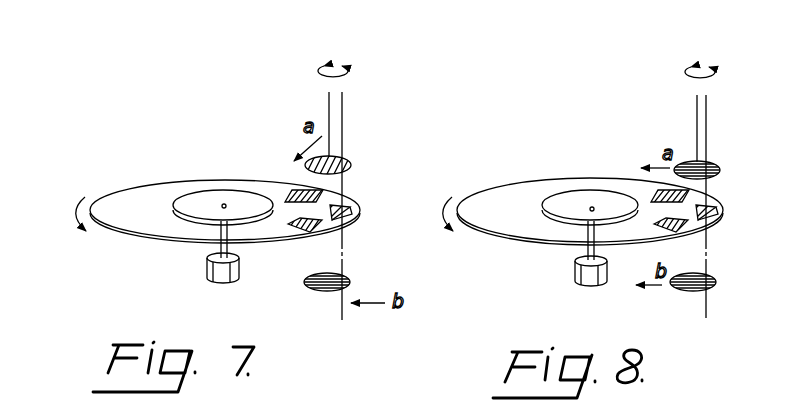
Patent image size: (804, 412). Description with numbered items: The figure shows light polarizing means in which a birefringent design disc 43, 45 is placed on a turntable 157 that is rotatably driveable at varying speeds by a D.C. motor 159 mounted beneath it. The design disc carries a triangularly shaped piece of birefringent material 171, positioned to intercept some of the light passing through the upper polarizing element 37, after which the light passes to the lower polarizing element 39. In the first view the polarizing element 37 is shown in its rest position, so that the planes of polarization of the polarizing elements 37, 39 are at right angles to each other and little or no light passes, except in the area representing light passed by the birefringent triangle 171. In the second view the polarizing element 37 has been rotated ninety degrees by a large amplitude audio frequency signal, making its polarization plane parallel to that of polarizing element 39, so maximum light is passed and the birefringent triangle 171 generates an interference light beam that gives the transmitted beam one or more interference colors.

In FIG. 7, the rotary table / disk 43 is at (196, 191).
In FIG. 8, the rotary table / disk 43 is at (587, 192).
In FIG. 7, the rotary table / disk 45 is at (118, 192).
In FIG. 8, the rotary table / disk 45 is at (517, 188).
In FIG. 7, the turntable 157 is at (204, 200).
In FIG. 8, the turntable 157 is at (582, 198).
In FIG. 7, the D.C. motor 159 is at (208, 266).
In FIG. 8, the D.C. motor 159 is at (576, 266).
In FIG. 7, the triangularly shaped piece of birefringent material 171 is at (352, 209).
In FIG. 8, the triangularly shaped piece of birefringent material 171 is at (720, 210).
In FIG. 7, the polarizing element 37 is at (350, 162).
In FIG. 8, the polarizing element 37 is at (720, 166).
In FIG. 7, the polarizing element 39 is at (350, 278).
In FIG. 8, the polarizing element 39 is at (716, 278).